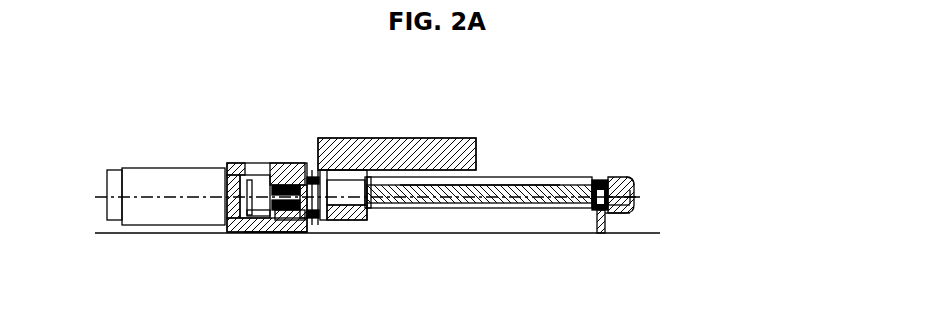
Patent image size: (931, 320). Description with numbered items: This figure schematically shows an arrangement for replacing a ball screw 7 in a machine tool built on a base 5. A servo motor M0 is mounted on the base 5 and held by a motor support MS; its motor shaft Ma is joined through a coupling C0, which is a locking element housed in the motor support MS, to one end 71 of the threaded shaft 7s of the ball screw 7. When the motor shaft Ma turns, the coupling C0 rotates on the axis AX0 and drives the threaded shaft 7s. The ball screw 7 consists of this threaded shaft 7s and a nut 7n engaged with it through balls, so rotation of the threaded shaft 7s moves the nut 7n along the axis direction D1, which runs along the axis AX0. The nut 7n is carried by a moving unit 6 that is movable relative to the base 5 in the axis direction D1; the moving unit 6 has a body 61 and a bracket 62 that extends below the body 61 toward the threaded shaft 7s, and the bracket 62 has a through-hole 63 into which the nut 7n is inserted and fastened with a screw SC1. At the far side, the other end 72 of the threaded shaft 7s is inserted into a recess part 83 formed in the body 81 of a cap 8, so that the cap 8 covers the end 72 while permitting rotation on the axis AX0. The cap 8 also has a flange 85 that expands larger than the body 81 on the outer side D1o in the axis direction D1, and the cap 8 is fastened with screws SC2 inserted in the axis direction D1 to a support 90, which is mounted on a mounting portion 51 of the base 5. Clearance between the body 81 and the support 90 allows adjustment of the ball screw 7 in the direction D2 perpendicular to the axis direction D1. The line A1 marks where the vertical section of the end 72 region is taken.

The servo motor M0 is at (133, 167).
The motor shaft Ma is at (232, 163).
The motor support MS is at (295, 160).
The coupling C0 is at (256, 171).
The nut 7n is at (346, 186).
The body 61 is at (433, 139).
The moving unit 6 is at (471, 137).
The axis AX0 is at (513, 176).
The body 81 is at (600, 180).
The cap 8 is at (626, 176).
The flange 85 is at (631, 180).
The screw SC2 is at (635, 186).
The mounting portion 51 is at (634, 197).
The base 5 is at (655, 232).
The end 71 is at (262, 233).
The screw SC1 is at (316, 222).
The bracket 62 is at (355, 221).
The through-hole 63 is at (372, 212).
The threaded shaft 7s is at (450, 206).
The ball screw 7 is at (498, 206).
The end 72 is at (600, 213).
The recess part 83 is at (605, 214).
The support 90 is at (620, 215).
The axis direction D1 is at (576, 172).
The outer side D1o is at (680, 132).
The direction D2 is at (757, 187).
The section line A1 is at (564, 222).